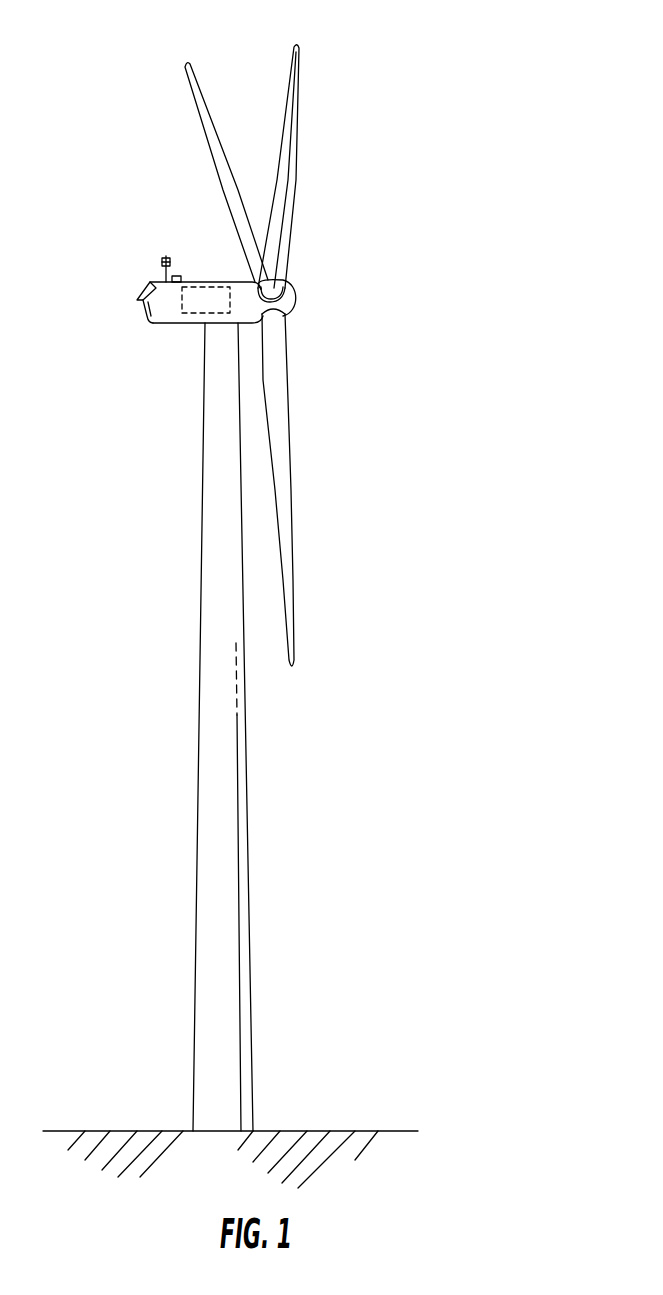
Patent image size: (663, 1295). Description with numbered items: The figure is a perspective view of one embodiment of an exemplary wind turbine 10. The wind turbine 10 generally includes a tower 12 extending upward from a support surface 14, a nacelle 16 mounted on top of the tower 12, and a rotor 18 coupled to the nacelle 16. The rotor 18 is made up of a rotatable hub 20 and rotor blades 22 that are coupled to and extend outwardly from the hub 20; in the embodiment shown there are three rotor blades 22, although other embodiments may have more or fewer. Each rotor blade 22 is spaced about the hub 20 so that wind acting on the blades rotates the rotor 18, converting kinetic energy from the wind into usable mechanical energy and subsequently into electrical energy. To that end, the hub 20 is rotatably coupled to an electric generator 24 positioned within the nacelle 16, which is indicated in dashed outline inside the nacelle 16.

The wind turbine 10 is at (436, 66).
The tower 12 is at (199, 858).
The support surface 14 is at (102, 1131).
The nacelle 16 is at (172, 325).
The rotor 18 is at (300, 276).
The rotatable hub 20 is at (293, 299).
The rotor blade 22 is at (288, 83).
The electric generator 24 is at (205, 278).